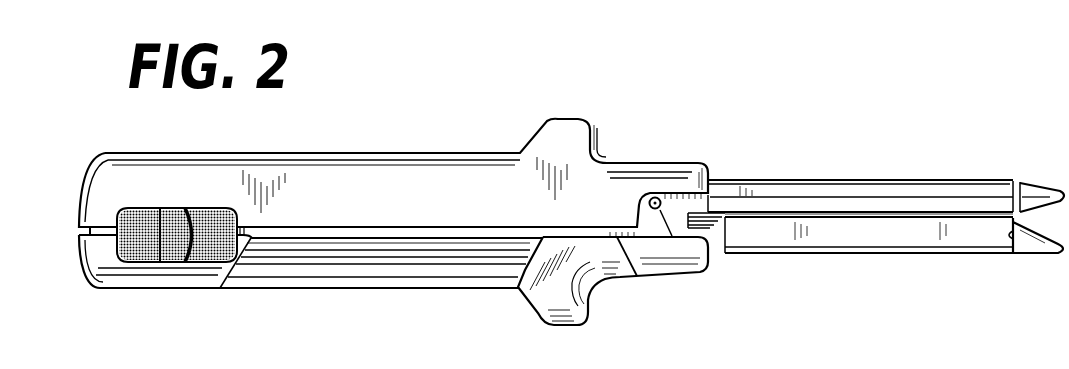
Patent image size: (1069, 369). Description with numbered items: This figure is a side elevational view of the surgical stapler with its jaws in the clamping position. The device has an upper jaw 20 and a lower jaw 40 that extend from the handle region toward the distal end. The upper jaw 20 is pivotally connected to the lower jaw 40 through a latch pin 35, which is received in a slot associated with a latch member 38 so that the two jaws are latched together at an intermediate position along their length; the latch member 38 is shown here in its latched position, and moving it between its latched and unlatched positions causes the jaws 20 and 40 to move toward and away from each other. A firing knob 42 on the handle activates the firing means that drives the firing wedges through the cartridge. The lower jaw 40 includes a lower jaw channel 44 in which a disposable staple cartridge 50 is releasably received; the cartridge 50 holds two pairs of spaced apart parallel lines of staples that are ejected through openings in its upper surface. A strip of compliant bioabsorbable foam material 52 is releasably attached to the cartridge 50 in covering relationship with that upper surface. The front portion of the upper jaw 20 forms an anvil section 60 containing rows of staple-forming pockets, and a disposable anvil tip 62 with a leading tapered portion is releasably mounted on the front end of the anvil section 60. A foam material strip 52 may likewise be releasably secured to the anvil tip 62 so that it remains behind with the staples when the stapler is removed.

The upper jaw 20 is at (383, 187).
The latch pin 35 is at (657, 197).
The latch member 38 is at (452, 277).
The lower jaw 40 is at (613, 278).
The firing knob 42 is at (175, 247).
The lower jaw channel 44 is at (865, 232).
The staple cartridge 50 is at (1042, 245).
The strip of compliant bioabsorbable foam material 52 is at (790, 213).
The anvil section 60 is at (915, 182).
The anvil tip 62 is at (1035, 182).